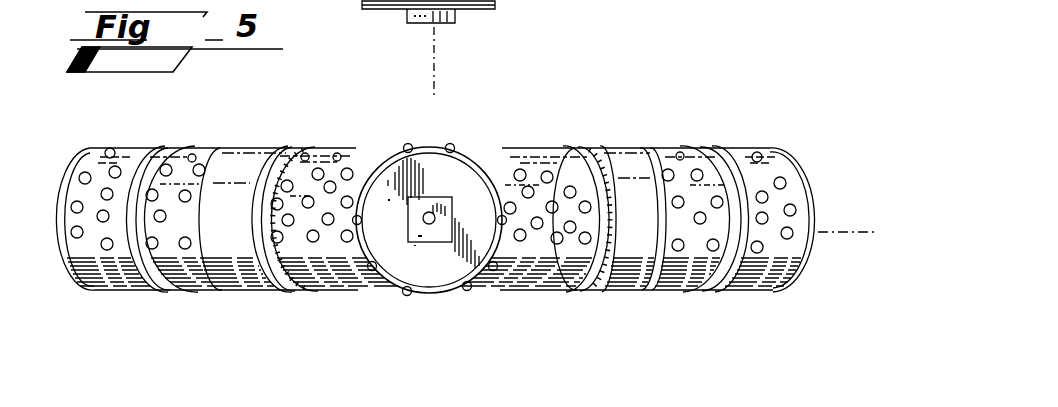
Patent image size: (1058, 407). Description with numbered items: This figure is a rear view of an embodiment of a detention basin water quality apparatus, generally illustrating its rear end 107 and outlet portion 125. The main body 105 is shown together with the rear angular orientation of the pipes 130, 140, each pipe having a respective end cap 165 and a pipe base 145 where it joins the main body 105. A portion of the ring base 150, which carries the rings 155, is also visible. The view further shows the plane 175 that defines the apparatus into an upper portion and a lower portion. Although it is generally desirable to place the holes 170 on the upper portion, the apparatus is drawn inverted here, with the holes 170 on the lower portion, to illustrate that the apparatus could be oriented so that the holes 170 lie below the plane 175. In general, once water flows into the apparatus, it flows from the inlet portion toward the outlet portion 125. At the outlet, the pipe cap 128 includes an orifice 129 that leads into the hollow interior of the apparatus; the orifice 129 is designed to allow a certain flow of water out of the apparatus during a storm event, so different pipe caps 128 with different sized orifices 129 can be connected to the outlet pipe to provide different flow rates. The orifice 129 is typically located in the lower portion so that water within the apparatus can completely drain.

The main body 105 is at (328, 150).
The rear end 107 is at (431, 143).
The outlet portion 125 is at (432, 300).
The pipe cap 128 is at (462, 12).
The orifice 129 is at (434, 215).
The pipe 130 is at (203, 155).
The pipe 140 is at (665, 157).
The pipe base 145 is at (352, 160).
The ring base 150 is at (597, 150).
The ring 155 is at (235, 225).
The end cap 165 is at (66, 172).
The hole 170 is at (77, 232).
The plane 175 is at (847, 217).